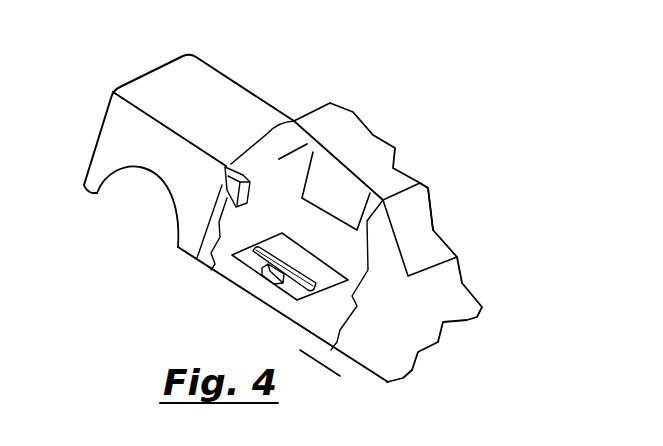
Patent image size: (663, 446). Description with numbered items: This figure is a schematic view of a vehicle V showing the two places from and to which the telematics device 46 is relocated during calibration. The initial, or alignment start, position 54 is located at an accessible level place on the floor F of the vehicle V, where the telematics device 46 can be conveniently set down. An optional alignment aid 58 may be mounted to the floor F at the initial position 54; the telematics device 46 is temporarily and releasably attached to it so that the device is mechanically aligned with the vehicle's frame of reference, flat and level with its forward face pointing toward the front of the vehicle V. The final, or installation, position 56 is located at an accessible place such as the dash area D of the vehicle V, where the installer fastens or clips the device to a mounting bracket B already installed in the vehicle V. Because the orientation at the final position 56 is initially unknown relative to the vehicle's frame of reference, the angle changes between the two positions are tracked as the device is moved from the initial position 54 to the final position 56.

The telematics device 46 is at (268, 273).
The initial position 54 is at (278, 278).
The final position 56 is at (183, 160).
The alignment aid 58 is at (255, 269).
The mounting bracket B is at (233, 172).
The dash area D is at (252, 182).
The vehicle V is at (410, 184).
The floor F is at (317, 300).